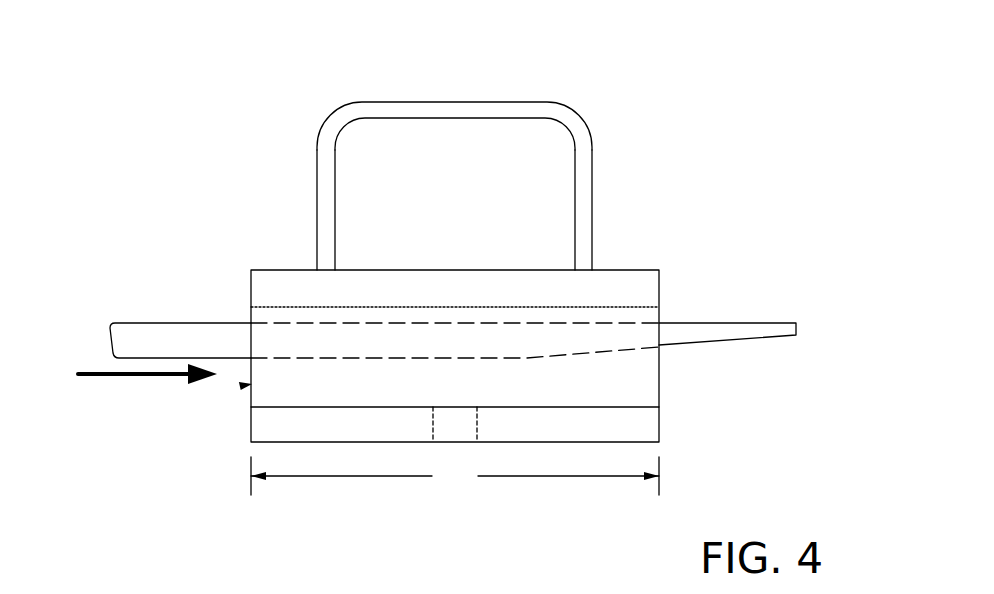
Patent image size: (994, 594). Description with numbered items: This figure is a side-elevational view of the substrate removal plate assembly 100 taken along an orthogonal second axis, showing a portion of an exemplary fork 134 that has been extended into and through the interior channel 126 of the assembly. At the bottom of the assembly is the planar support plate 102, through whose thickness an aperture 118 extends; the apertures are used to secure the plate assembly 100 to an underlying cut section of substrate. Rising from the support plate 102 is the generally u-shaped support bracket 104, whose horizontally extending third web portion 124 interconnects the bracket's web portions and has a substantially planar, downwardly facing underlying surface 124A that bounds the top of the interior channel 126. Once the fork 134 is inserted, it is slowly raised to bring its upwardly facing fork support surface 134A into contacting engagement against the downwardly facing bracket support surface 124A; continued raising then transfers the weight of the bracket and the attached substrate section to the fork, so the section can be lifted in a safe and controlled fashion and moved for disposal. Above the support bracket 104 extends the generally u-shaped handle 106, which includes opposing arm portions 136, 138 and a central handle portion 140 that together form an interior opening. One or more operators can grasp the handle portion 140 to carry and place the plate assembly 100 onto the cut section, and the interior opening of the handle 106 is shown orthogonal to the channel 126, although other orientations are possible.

The substrate removal plate assembly 100 is at (136, 95).
The support plate 102 is at (265, 422).
The support bracket 104 is at (672, 290).
The handle 106 is at (395, 90).
The aperture 118 is at (473, 411).
The third web portion 124 is at (607, 285).
The underlying surface of the third web portion 124A is at (300, 307).
The interior channel 126 is at (242, 386).
The fork 134 is at (168, 337).
The fork support surface 134A is at (327, 323).
The arm portion 136 is at (322, 170).
The arm portion 138 is at (582, 190).
The central handle portion 140 is at (467, 106).